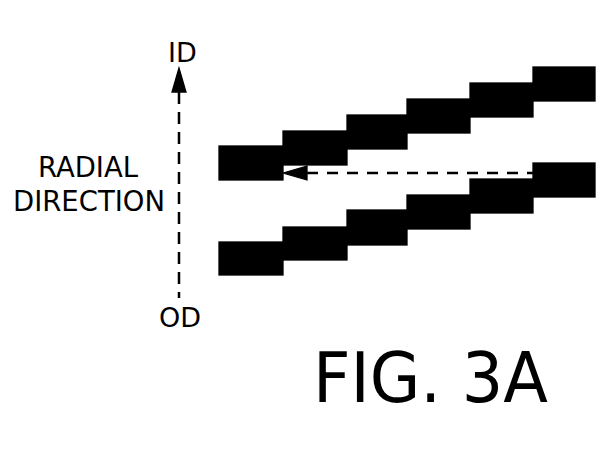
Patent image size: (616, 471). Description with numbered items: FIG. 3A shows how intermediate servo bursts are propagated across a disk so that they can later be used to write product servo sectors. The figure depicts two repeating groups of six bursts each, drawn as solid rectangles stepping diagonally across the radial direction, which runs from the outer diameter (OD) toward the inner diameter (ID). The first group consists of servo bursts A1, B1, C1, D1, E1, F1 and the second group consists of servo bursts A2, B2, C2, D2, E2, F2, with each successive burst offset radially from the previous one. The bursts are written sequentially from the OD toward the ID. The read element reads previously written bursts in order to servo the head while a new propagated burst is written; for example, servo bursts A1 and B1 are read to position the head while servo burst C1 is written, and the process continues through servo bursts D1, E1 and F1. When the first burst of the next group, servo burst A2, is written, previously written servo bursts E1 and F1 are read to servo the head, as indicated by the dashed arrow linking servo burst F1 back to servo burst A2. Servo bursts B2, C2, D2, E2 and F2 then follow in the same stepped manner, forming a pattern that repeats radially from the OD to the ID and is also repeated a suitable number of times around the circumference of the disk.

The servo burst A1 is at (251, 276).
The servo burst B1 is at (315, 260).
The servo burst C1 is at (377, 243).
The servo burst D1 is at (438, 230).
The servo burst E1 is at (501, 213).
The servo burst F1 is at (564, 197).
The servo burst A2 is at (251, 146).
The servo burst B2 is at (315, 131).
The servo burst C2 is at (377, 115).
The servo burst D2 is at (438, 100).
The servo burst E2 is at (501, 84).
The servo burst F2 is at (564, 68).